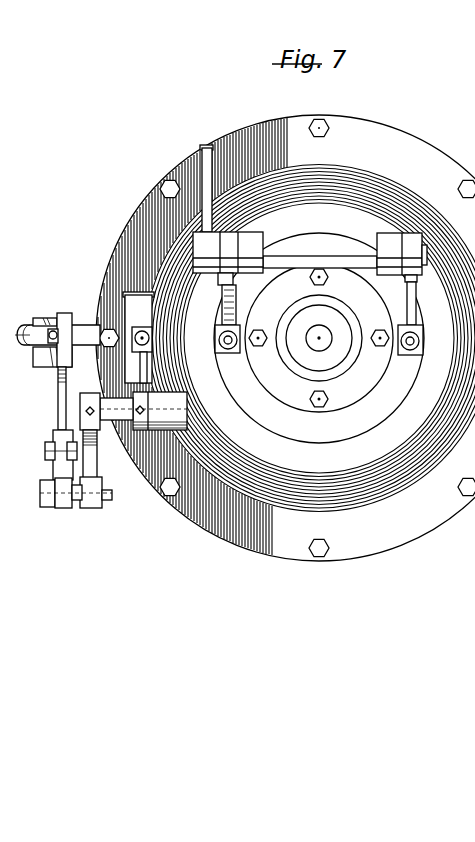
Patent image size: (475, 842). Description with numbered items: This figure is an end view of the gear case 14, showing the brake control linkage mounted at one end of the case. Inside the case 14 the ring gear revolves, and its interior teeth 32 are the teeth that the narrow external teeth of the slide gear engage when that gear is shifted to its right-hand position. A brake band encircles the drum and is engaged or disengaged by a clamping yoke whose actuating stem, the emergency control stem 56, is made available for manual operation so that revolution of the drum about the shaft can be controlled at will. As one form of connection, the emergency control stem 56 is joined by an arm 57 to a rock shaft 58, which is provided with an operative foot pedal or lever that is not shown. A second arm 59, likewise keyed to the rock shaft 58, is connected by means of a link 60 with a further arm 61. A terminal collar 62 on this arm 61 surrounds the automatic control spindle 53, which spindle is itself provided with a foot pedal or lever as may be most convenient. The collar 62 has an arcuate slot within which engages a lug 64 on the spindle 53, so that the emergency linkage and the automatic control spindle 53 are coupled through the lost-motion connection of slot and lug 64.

The case 14 is at (388, 473).
The teeth on the interior of the ring gear 32 is at (233, 343).
The automatic control spindle 53 is at (25, 330).
The emergency control stem 56 is at (150, 336).
The arm 57 is at (146, 368).
The rock shaft 58 is at (80, 412).
The arm 59 is at (97, 462).
The link 60 is at (55, 468).
The arm 61 is at (58, 393).
The terminal collar 62 is at (69, 313).
The lug 64 is at (50, 337).